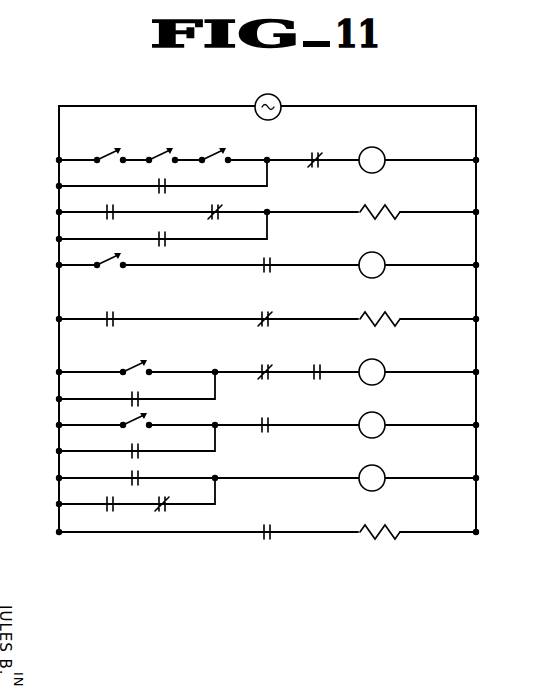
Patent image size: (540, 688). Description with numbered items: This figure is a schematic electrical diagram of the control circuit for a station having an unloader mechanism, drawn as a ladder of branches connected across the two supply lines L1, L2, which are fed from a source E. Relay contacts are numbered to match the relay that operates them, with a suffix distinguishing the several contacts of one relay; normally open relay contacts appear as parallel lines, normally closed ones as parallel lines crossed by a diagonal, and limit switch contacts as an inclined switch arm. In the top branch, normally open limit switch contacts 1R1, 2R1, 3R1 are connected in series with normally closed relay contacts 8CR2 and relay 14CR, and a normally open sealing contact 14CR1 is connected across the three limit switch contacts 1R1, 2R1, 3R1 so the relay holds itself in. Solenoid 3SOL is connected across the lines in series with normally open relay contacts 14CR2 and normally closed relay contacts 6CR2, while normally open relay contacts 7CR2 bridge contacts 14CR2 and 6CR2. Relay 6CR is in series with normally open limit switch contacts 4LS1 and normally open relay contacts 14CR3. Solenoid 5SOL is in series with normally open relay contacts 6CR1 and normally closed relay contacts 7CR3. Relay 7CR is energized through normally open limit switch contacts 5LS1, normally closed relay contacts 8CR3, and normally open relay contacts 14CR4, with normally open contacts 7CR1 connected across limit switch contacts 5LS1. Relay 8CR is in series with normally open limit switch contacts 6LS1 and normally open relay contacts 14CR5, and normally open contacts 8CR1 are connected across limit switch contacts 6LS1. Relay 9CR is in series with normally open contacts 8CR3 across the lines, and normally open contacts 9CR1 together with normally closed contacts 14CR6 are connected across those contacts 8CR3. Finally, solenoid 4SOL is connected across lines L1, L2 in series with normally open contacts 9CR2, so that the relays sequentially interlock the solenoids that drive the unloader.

The AC power source E is at (278, 97).
The line L1 is at (57, 133).
The line L2 is at (478, 141).
The normally open limit switch contacts 1R1 is at (110, 144).
The normally open limit switch contacts 2R1 is at (169, 144).
The normally open limit switch contacts 3R1 is at (215, 156).
The normally closed relay contacts 8CR2 is at (310, 156).
The relay 14CR is at (372, 147).
The normally open sealing contact 14CR1 is at (160, 181).
The normally open relay contacts 14CR2 is at (111, 212).
The normally closed relay contacts 6CR2 is at (218, 213).
The solenoid 3SOL is at (367, 213).
The normally open relay contacts 7CR2 is at (160, 236).
The normally open relay contacts 14CR3 is at (272, 265).
The relay 6CR is at (386, 262).
The normally open limit switch contacts 4LS1 is at (108, 259).
The normally open relay contacts 6CR1 is at (114, 318).
The normally closed relay contacts 7CR3 is at (270, 322).
The solenoid 5SOL is at (368, 320).
The normally open limit switch contacts 5LS1 is at (138, 362).
The relay contacts 8CR3 is at (273, 352).
The normally open relay contacts 14CR4 is at (331, 359).
The relay 7CR is at (386, 374).
The normally open contacts 7CR1 is at (138, 394).
The normally open limit switch contacts 6LS1 is at (136, 420).
The normally open relay contacts 14CR5 is at (262, 420).
The relay 8CR is at (386, 428).
The normally open contacts 8CR1 is at (136, 451).
The relay 9CR is at (384, 480).
The normally open contacts 9CR1 is at (120, 524).
The normally closed contacts 14CR6 is at (166, 508).
The normally open contacts 9CR2 is at (266, 530).
The solenoid 4SOL is at (375, 533).